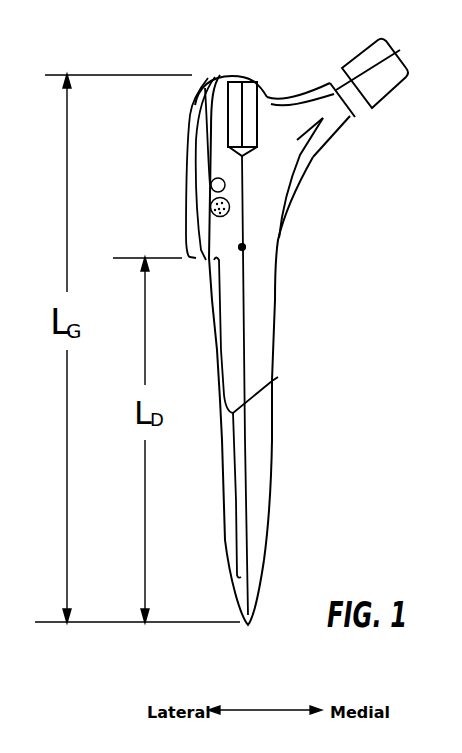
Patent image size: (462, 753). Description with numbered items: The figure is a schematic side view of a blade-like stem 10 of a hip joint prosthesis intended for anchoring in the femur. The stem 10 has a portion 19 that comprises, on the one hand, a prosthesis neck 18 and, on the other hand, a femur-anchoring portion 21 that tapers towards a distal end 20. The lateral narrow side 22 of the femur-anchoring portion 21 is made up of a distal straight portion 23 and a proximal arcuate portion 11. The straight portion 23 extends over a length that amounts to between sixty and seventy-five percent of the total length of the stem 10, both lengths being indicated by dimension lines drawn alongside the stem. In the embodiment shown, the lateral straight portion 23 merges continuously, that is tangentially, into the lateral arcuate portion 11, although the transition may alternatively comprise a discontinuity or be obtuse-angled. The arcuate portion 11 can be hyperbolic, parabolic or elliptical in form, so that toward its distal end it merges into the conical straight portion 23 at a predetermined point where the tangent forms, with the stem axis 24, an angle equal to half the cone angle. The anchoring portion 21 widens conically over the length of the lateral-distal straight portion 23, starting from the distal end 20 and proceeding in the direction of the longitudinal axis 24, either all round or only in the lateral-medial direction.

The blade-like stem 10 is at (260, 287).
The proximal arcuate portion 11 is at (188, 132).
The prosthesis neck 18 is at (350, 146).
The portion comprising prosthesis neck 19 is at (346, 156).
The distal end 20 is at (263, 591).
The femur-anchoring portion 21 is at (258, 413).
The lateral narrow side 22 is at (206, 312).
The distal straight portion 23 is at (273, 380).
The stem axis 24 is at (244, 246).